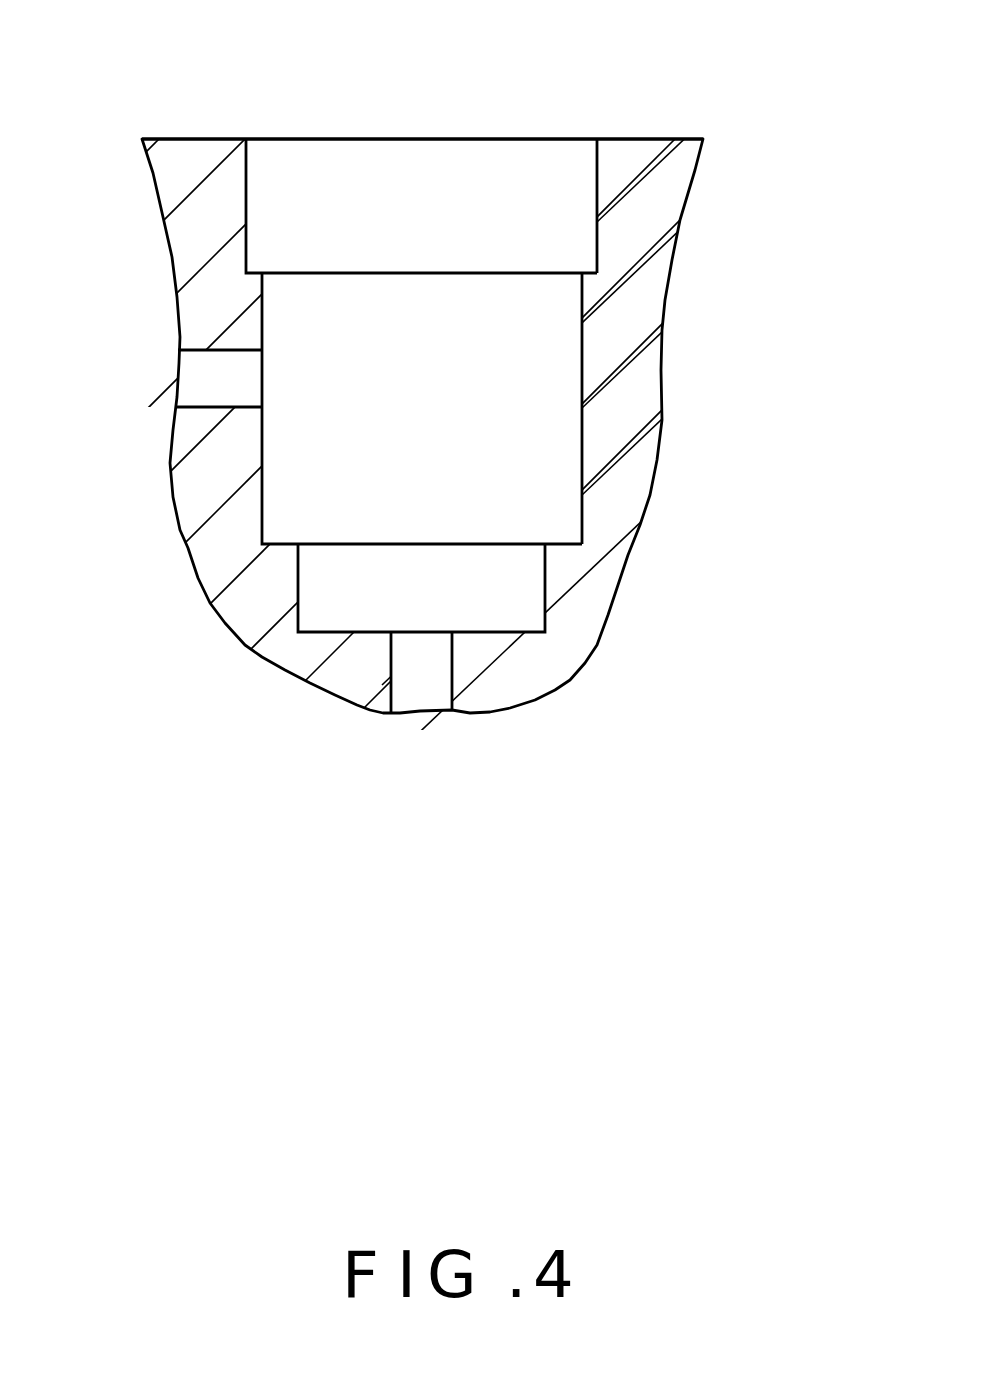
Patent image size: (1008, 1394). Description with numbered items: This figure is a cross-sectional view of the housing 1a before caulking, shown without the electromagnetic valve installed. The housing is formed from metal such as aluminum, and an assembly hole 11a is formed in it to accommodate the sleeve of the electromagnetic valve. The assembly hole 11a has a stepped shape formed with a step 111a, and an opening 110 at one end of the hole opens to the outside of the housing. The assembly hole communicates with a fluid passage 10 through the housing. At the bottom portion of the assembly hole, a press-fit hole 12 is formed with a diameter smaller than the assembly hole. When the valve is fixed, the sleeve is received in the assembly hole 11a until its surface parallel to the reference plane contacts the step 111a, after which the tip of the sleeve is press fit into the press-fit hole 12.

The housing 1a is at (195, 120).
The fluid passage 10 is at (202, 385).
The assembly hole 11a is at (247, 193).
The opening 110 is at (500, 138).
The step 111a is at (588, 273).
The press-fit hole 12 is at (545, 597).